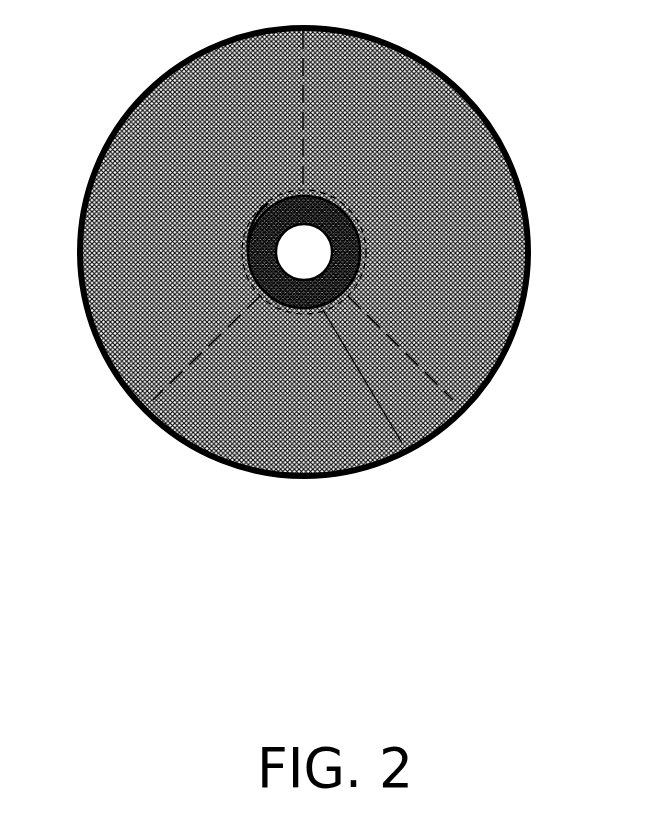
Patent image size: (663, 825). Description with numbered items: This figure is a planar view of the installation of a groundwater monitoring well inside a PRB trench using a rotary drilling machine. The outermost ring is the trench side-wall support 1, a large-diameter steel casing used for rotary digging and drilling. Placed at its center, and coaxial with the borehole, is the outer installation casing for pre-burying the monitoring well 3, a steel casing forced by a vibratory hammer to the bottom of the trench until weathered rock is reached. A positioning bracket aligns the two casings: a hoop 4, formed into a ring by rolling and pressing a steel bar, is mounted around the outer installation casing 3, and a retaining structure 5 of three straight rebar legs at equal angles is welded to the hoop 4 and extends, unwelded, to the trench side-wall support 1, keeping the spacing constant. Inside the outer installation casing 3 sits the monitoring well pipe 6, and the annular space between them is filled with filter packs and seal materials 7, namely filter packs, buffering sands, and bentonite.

The trench side-wall support 1 is at (150, 417).
The outer installation casing for pre-burying the monitoring well 3 is at (363, 232).
The hoop 4 is at (245, 243).
The retaining structure 5 is at (303, 108).
The monitoring well pipe 6 is at (330, 260).
The filter packs and seal materials 7 is at (402, 443).